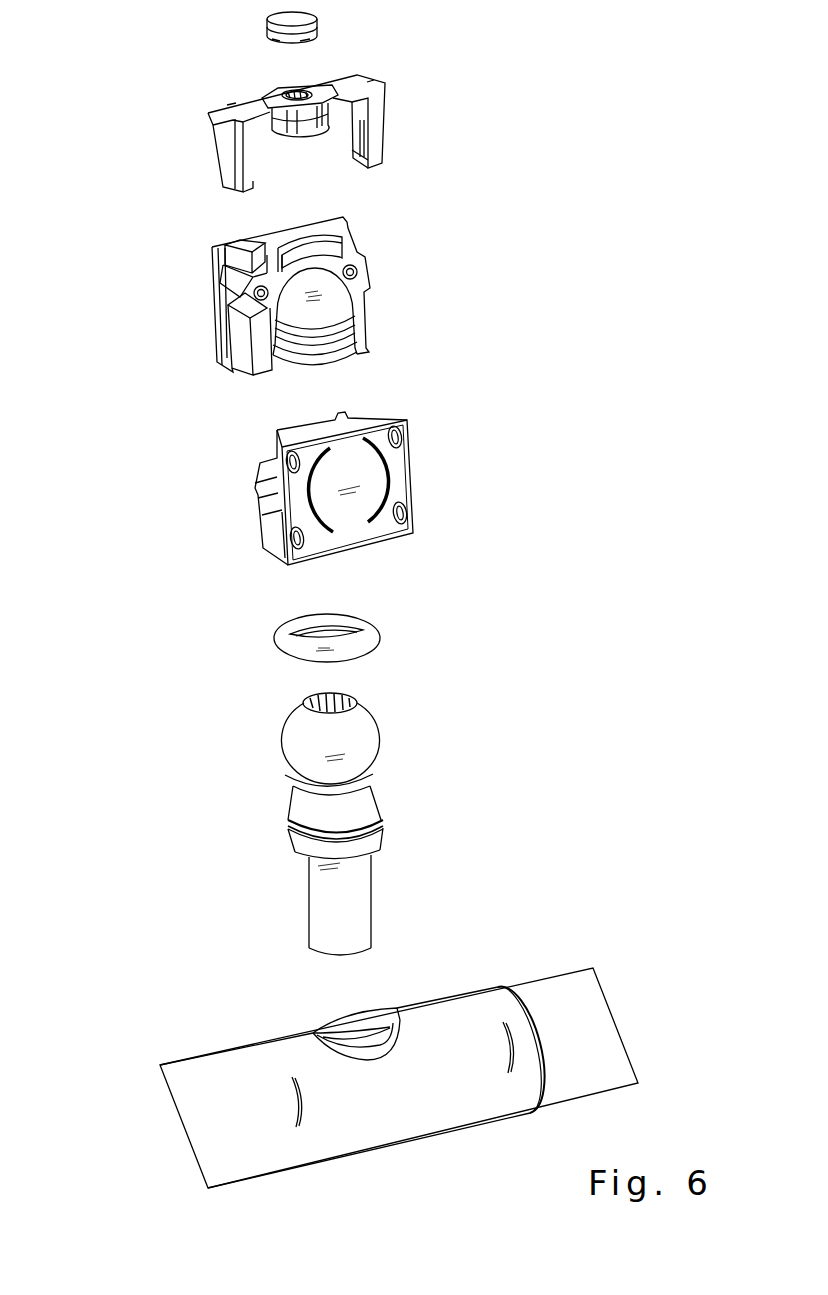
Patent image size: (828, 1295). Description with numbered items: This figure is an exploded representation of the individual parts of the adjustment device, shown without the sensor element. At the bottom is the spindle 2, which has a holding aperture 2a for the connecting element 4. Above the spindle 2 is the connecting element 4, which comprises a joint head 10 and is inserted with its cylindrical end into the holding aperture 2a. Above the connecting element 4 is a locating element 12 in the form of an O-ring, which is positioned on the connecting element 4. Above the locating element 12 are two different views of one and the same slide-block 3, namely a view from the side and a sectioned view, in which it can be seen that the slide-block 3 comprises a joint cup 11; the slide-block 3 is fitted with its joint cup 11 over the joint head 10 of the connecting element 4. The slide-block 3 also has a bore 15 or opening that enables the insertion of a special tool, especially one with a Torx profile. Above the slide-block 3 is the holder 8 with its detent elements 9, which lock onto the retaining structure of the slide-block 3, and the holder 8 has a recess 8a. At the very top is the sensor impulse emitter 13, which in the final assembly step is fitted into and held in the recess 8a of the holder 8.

The spindle 2 is at (270, 1103).
The holding aperture 2a is at (320, 1024).
The slide-block 3 is at (243, 343).
The connecting element 4 is at (276, 855).
The holder 8 is at (243, 132).
The recess 8a is at (273, 88).
The detent elements 9 is at (352, 163).
The joint head 10 is at (333, 745).
The joint cup 11 is at (287, 302).
The locating element 12 is at (273, 640).
The sensor impulse emitter 13 is at (263, 24).
The bore 15 is at (282, 250).